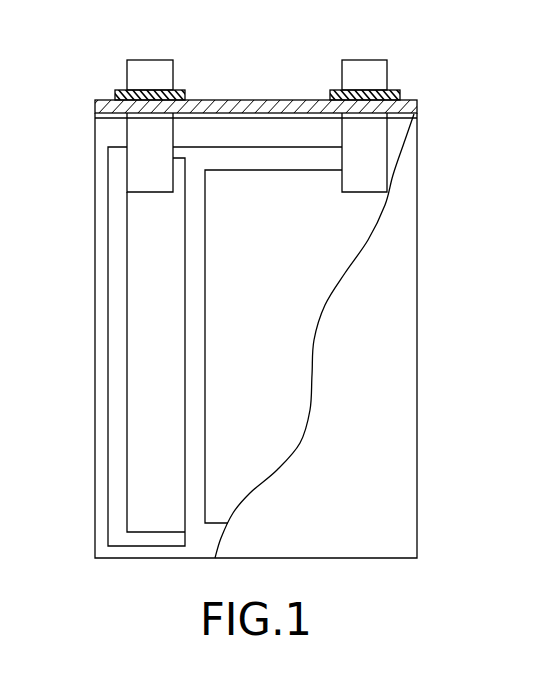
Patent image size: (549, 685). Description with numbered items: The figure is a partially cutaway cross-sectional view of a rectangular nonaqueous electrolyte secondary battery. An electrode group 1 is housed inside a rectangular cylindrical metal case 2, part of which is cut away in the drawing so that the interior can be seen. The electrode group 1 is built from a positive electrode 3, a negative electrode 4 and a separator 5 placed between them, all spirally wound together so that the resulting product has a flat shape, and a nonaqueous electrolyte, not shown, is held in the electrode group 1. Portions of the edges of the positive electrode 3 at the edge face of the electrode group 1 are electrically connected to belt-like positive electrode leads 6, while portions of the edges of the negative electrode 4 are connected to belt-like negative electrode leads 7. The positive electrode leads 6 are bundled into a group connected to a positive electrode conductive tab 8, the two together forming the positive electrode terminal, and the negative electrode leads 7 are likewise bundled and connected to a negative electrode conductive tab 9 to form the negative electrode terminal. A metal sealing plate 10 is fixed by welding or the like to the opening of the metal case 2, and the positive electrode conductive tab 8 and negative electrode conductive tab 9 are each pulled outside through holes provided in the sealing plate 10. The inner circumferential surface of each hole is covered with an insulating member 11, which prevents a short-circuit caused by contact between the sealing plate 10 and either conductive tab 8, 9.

The electrode group 1 is at (298, 139).
The metal case 2 is at (408, 416).
The positive electrode 3 is at (137, 312).
The negative electrode 4 is at (243, 207).
The separator 5 is at (193, 405).
The positive electrode leads 6 is at (137, 137).
The negative electrode leads 7 is at (378, 140).
The positive electrode conductive tab 8 is at (147, 70).
The negative electrode conductive tab 9 is at (370, 68).
The sealing plate 10 is at (116, 98).
The insulating member 11 is at (173, 91).